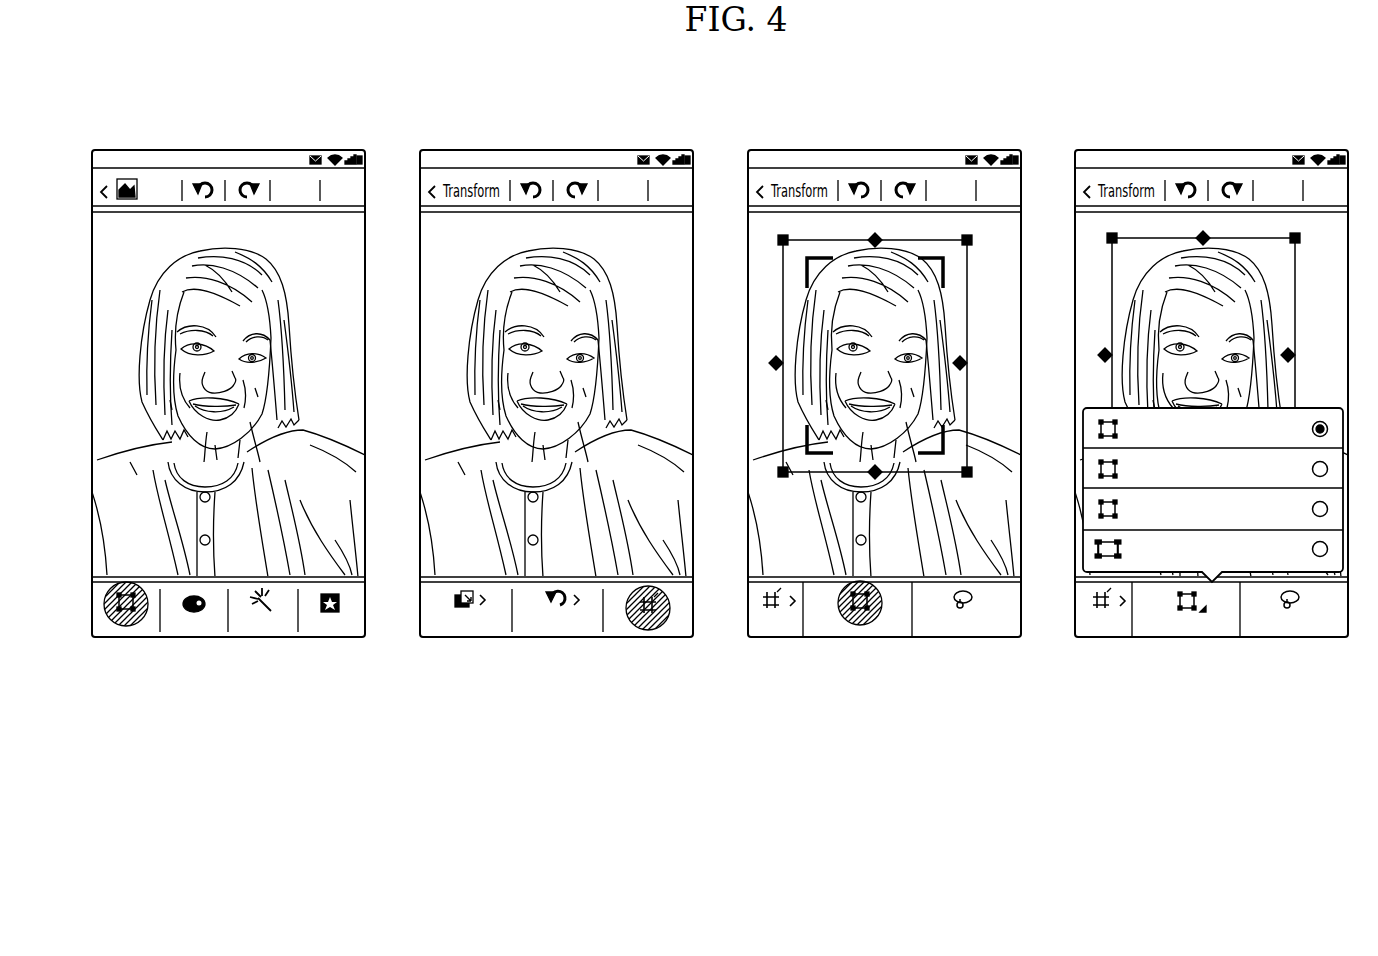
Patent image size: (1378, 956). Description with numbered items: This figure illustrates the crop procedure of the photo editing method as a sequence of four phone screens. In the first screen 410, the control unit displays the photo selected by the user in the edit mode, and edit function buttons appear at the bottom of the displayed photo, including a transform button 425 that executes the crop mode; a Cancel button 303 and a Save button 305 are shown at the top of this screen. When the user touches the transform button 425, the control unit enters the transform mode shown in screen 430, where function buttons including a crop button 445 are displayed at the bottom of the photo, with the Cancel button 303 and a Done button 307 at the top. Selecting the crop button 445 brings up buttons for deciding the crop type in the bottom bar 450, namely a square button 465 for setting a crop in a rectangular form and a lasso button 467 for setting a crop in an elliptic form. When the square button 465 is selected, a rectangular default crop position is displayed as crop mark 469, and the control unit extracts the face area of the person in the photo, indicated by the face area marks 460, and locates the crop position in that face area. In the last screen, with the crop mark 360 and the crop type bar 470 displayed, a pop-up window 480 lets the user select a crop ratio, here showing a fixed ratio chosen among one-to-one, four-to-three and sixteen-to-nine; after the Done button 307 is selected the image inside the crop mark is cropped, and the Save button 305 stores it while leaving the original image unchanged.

The cancel button 303 is at (297, 182).
The Save button 305 is at (353, 181).
The done button 307 is at (680, 181).
The screen 410 is at (320, 638).
The transform button 425 is at (122, 622).
The screen 430 is at (623, 638).
The crop button 445 is at (670, 620).
The crop submenu bar 450 is at (937, 638).
The face recognition indicator 460 is at (805, 275).
The square button 465 is at (840, 615).
The lasso button 467 is at (1003, 610).
The crop mark 469 is at (967, 308).
The crop region box 360 is at (1110, 270).
The crop submenu bar 470 is at (1265, 636).
The pop-up window 480 is at (1080, 505).